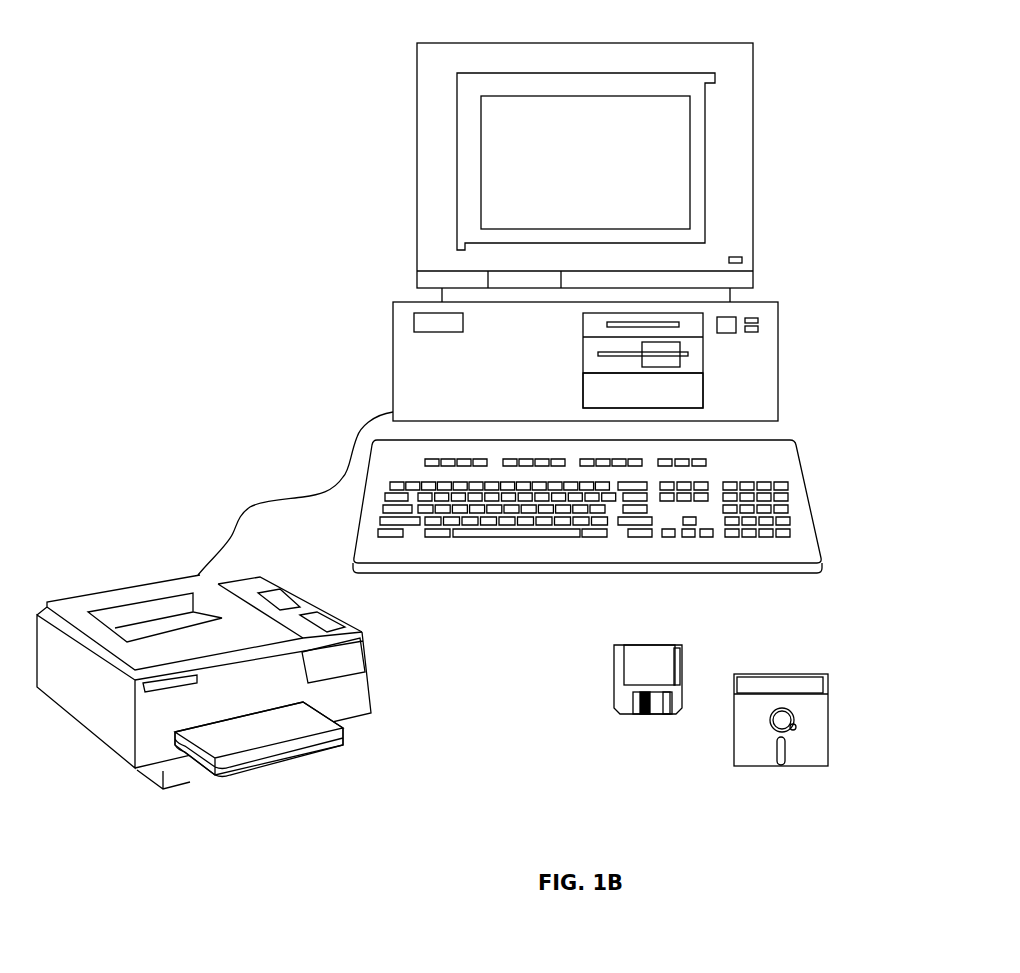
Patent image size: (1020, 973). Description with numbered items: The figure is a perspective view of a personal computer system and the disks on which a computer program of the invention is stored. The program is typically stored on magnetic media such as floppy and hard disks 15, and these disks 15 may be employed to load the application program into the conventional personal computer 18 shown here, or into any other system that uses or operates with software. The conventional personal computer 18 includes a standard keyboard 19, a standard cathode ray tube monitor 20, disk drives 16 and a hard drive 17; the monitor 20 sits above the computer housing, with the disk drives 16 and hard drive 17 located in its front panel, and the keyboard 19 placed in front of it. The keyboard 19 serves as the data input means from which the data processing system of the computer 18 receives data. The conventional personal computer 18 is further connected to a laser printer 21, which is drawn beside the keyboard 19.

The floppy and hard disks 15 is at (683, 675).
The disk drives 16 is at (705, 357).
The hard drive 17 is at (705, 390).
The conventional personal computer 18 is at (780, 393).
The standard keyboard 19 is at (812, 508).
The standard cathode ray tube (CRT) monitor 20 is at (755, 165).
The laser printer 21 is at (372, 693).